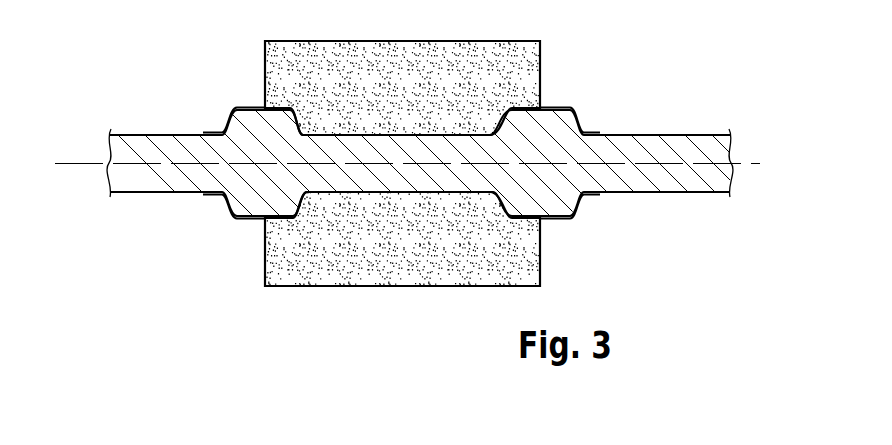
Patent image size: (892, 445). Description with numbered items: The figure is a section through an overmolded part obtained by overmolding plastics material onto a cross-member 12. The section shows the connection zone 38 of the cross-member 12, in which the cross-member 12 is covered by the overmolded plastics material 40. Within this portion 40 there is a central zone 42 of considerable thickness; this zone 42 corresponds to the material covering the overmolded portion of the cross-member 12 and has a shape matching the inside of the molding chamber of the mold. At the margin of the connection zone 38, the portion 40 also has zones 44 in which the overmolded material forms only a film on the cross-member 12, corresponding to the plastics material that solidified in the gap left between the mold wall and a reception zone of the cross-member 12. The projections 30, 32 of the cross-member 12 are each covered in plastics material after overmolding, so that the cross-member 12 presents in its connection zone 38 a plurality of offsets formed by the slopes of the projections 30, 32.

The cross-member 12 is at (107, 143).
The projection 30 is at (240, 197).
The projection 32 is at (560, 198).
The connection zone 38 is at (550, 230).
The overmolded plastics material 40 is at (268, 67).
The central zone 42 is at (399, 278).
The zones 44 is at (236, 217).